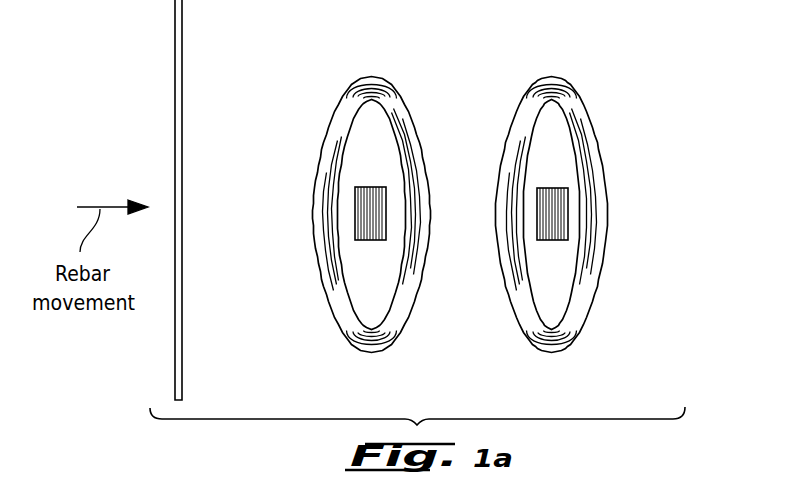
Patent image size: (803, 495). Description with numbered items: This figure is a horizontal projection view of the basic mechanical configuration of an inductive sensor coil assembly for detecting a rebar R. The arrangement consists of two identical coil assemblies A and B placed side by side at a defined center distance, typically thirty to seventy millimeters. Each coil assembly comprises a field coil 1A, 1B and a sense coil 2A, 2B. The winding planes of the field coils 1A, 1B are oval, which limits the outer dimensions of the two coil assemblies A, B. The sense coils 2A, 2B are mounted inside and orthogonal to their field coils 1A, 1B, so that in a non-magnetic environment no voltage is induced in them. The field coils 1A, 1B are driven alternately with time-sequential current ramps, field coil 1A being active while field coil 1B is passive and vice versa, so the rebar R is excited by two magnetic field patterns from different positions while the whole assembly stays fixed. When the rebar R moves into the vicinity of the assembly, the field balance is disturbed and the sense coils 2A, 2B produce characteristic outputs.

The rebar R is at (175, 70).
The coil assembly A is at (346, 189).
The coil assembly B is at (580, 189).
The field coil 1A is at (330, 145).
The field coil 1B is at (597, 145).
The sense coil 2A is at (366, 227).
The sense coil 2B is at (561, 227).